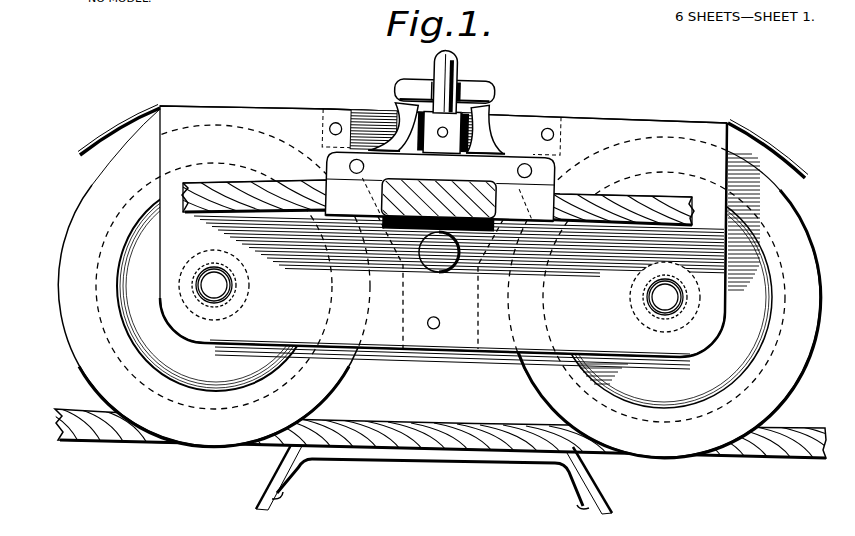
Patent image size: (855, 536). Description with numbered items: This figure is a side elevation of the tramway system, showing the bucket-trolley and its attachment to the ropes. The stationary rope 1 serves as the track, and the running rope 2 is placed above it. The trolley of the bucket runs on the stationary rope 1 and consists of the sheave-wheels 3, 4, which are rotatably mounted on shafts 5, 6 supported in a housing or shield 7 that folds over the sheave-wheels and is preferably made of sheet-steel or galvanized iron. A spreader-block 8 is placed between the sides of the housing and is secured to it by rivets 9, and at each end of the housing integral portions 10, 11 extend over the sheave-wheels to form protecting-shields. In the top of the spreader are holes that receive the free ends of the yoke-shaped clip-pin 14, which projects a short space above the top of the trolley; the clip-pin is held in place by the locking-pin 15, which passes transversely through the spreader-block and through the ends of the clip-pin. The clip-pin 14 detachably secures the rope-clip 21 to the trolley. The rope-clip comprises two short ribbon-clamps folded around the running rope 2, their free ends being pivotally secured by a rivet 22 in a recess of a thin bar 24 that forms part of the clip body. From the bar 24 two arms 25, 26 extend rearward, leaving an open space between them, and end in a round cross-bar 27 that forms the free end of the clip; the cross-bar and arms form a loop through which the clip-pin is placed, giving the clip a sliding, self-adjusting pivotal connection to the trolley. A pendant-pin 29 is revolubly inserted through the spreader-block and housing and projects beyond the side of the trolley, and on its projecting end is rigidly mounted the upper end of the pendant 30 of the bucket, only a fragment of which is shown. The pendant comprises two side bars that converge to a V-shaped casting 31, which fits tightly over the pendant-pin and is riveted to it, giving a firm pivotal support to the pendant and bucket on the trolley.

The stationary rope 1 is at (110, 428).
The running rope 2 is at (220, 176).
The sheave-wheel 3 is at (214, 286).
The sheave-wheel 4 is at (664, 297).
The shaft 5 is at (220, 286).
The shaft 6 is at (664, 297).
The housing or shield 7 is at (267, 119).
The spreader-block 8 is at (513, 113).
The rivets 9 is at (335, 126).
The integral portion (protecting-shield) 10 is at (118, 125).
The integral portion (protecting-shield) 11 is at (777, 147).
The clip-pin 14 is at (456, 61).
The locking-pin 15 is at (441, 138).
The rope-clip 21 is at (400, 116).
The rivet 22 is at (350, 169).
The bar 24 is at (440, 192).
The arm 25 is at (332, 150).
The arm 26 is at (500, 146).
The cross-bar 27 is at (478, 90).
The pendant-pin 29 is at (440, 272).
The pendant 30 is at (268, 483).
The V-shaped casting 31 is at (470, 456).